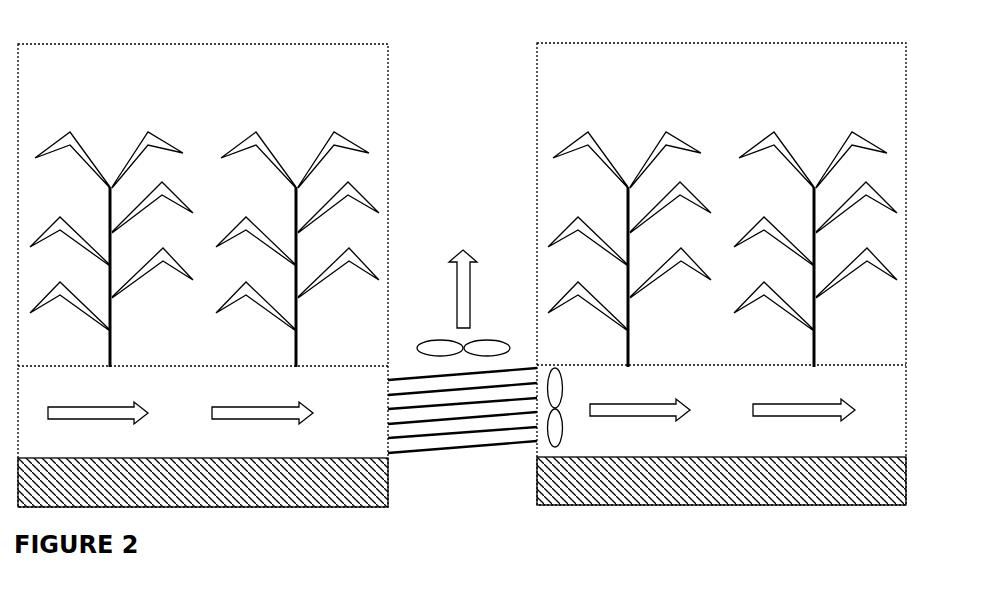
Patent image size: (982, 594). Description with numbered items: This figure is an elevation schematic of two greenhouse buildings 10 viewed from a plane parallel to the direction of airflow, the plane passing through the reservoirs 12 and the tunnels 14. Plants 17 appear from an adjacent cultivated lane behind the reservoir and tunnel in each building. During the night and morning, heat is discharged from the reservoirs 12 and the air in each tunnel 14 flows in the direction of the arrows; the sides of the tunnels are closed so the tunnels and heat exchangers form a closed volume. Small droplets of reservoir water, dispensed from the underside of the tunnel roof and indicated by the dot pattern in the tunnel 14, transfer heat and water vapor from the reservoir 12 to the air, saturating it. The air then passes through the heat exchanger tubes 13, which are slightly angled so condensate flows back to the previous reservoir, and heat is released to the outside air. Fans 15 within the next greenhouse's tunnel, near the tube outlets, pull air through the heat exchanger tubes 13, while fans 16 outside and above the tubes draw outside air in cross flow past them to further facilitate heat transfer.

The greenhouse buildings 10 is at (462, 275).
The reservoirs 12 is at (182, 474).
The heat exchanger tubes 13 is at (462, 421).
The tunnels 14 is at (451, 401).
The fans 15 is at (569, 407).
The fans 16 is at (458, 303).
The plants 17 is at (463, 248).